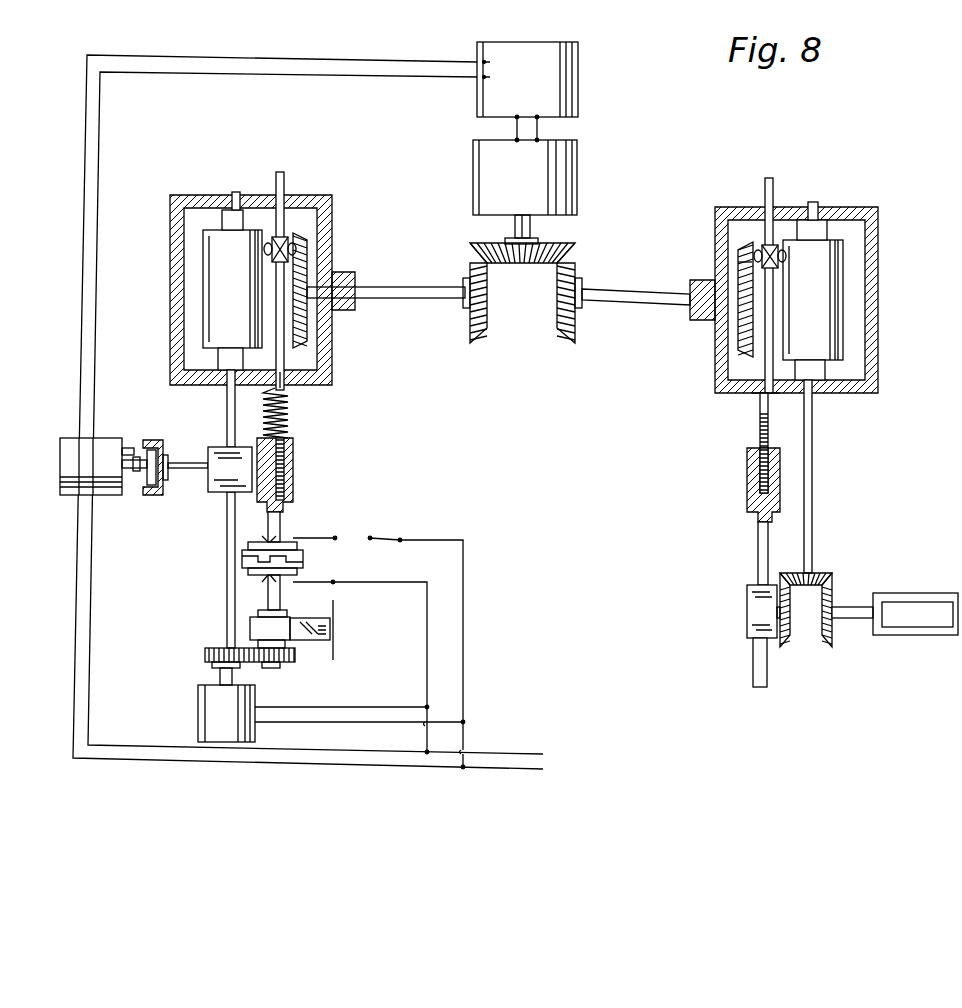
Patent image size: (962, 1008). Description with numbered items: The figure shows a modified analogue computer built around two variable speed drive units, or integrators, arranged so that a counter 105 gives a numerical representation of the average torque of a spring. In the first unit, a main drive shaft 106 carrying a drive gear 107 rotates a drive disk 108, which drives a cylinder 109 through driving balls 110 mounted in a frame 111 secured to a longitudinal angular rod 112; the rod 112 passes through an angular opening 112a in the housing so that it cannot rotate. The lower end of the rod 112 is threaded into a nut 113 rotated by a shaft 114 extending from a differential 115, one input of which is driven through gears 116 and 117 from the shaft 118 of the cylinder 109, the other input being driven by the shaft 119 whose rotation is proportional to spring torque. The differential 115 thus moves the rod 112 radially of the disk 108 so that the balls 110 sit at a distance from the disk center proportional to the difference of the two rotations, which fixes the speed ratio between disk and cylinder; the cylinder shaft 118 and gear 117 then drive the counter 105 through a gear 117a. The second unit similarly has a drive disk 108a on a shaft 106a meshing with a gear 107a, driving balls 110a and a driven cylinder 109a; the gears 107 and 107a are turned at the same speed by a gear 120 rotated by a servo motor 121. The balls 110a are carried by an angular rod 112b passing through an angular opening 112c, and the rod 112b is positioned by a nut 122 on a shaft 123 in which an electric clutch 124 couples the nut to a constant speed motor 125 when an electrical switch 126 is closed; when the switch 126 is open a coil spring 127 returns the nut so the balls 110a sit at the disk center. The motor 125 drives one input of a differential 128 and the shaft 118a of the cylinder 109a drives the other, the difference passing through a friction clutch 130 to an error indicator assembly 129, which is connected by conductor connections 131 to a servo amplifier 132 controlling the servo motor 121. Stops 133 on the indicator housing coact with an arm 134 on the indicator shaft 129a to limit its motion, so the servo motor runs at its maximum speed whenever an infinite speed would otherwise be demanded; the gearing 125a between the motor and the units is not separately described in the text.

The counter 105 is at (907, 637).
The main drive shaft 106 is at (613, 303).
The shaft 106a is at (438, 288).
The drive gear 107 is at (566, 347).
The gear 107a is at (472, 330).
The drive disk 108 is at (740, 262).
The drive disk 108a is at (308, 258).
The cylinder 109 is at (844, 260).
The driven cylinder 109a is at (208, 265).
The driving balls 110 is at (780, 246).
The driving balls 110a is at (284, 240).
The frame 111 is at (760, 243).
The angular rod 112 is at (760, 417).
The angular opening 112a is at (757, 395).
The angular rod 112b is at (285, 358).
The angular opening 112c is at (297, 377).
The nut 113 is at (747, 468).
The shaft 114 is at (758, 545).
The differential 115 is at (747, 600).
The gear 116 is at (790, 635).
The gear 117 is at (820, 573).
The gear 117a is at (832, 587).
The shaft 118 is at (813, 452).
The shaft 118a is at (229, 400).
The shaft 119 is at (760, 688).
The gear 120 is at (560, 243).
The servo motor 121 is at (572, 173).
The nut 122 is at (294, 456).
The shaft 123 is at (283, 522).
The electric clutch 124 is at (304, 563).
The constant speed motor 125 is at (198, 713).
The gear train 125a is at (226, 585).
The electrical switch 126 is at (392, 533).
The coil spring 127 is at (290, 421).
The differential 128 is at (221, 492).
The error indicator assembly 129 is at (66, 438).
The shaft 129a is at (112, 497).
The friction clutch 130 is at (153, 440).
The conductor connections 131 is at (76, 318).
The servo amplifier 132 is at (580, 82).
The stops 133 is at (127, 447).
The arm 134 is at (137, 470).